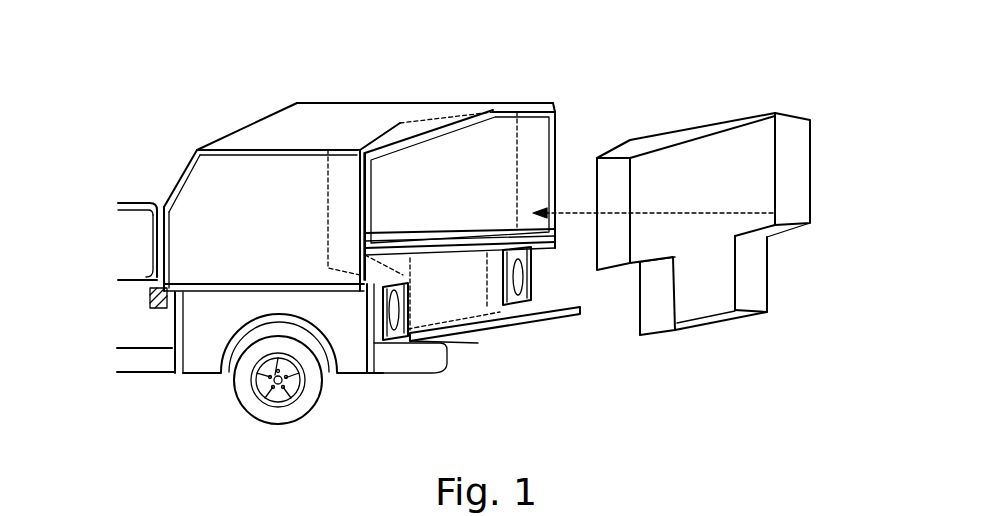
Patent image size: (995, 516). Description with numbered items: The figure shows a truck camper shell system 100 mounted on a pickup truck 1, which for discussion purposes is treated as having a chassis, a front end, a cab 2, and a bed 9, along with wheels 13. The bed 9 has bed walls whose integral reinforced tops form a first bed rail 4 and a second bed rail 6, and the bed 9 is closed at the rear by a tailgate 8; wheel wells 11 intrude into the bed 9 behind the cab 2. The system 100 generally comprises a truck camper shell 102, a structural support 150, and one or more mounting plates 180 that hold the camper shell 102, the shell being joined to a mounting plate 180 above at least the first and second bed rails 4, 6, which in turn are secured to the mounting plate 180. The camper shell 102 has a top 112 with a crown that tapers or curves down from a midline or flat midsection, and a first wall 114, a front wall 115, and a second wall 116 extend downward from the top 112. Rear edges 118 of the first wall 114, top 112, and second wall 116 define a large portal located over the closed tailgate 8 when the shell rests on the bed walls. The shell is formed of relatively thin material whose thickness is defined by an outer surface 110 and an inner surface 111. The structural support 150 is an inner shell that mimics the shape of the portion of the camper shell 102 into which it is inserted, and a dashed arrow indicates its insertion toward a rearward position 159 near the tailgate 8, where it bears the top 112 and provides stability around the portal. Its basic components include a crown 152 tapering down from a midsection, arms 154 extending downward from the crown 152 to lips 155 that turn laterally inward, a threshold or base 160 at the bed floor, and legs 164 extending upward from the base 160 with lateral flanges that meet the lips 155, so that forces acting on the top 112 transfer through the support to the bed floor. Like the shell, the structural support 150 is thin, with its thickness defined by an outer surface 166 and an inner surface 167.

The truck camper shell system 100 is at (151, 55).
The pickup truck 1 is at (135, 203).
The cab 2 is at (137, 209).
The truck camper shell 102 is at (280, 110).
The outer surface 110 is at (380, 110).
The inner surface 111 is at (497, 152).
The top 112 is at (337, 112).
The first wall 114 is at (237, 180).
The front wall 115 is at (182, 181).
The second wall 116 is at (558, 143).
The rear edges 118 is at (540, 112).
The rearward position 159 is at (520, 150).
The bed 9 is at (198, 358).
The wheel wells 11 is at (228, 350).
The wheels 13 is at (268, 412).
The first bed rail 4 is at (388, 285).
The second bed rail 6 is at (525, 258).
The tailgate 8 is at (503, 333).
The mounting plate 180 is at (388, 284).
The structural support 150 is at (794, 117).
The crown 152 is at (705, 125).
The arms 154 is at (811, 172).
The lips 155 is at (787, 232).
The base 160 is at (725, 325).
The legs 164 is at (767, 273).
The outer surface 166 is at (615, 260).
The inner surface 167 is at (787, 158).